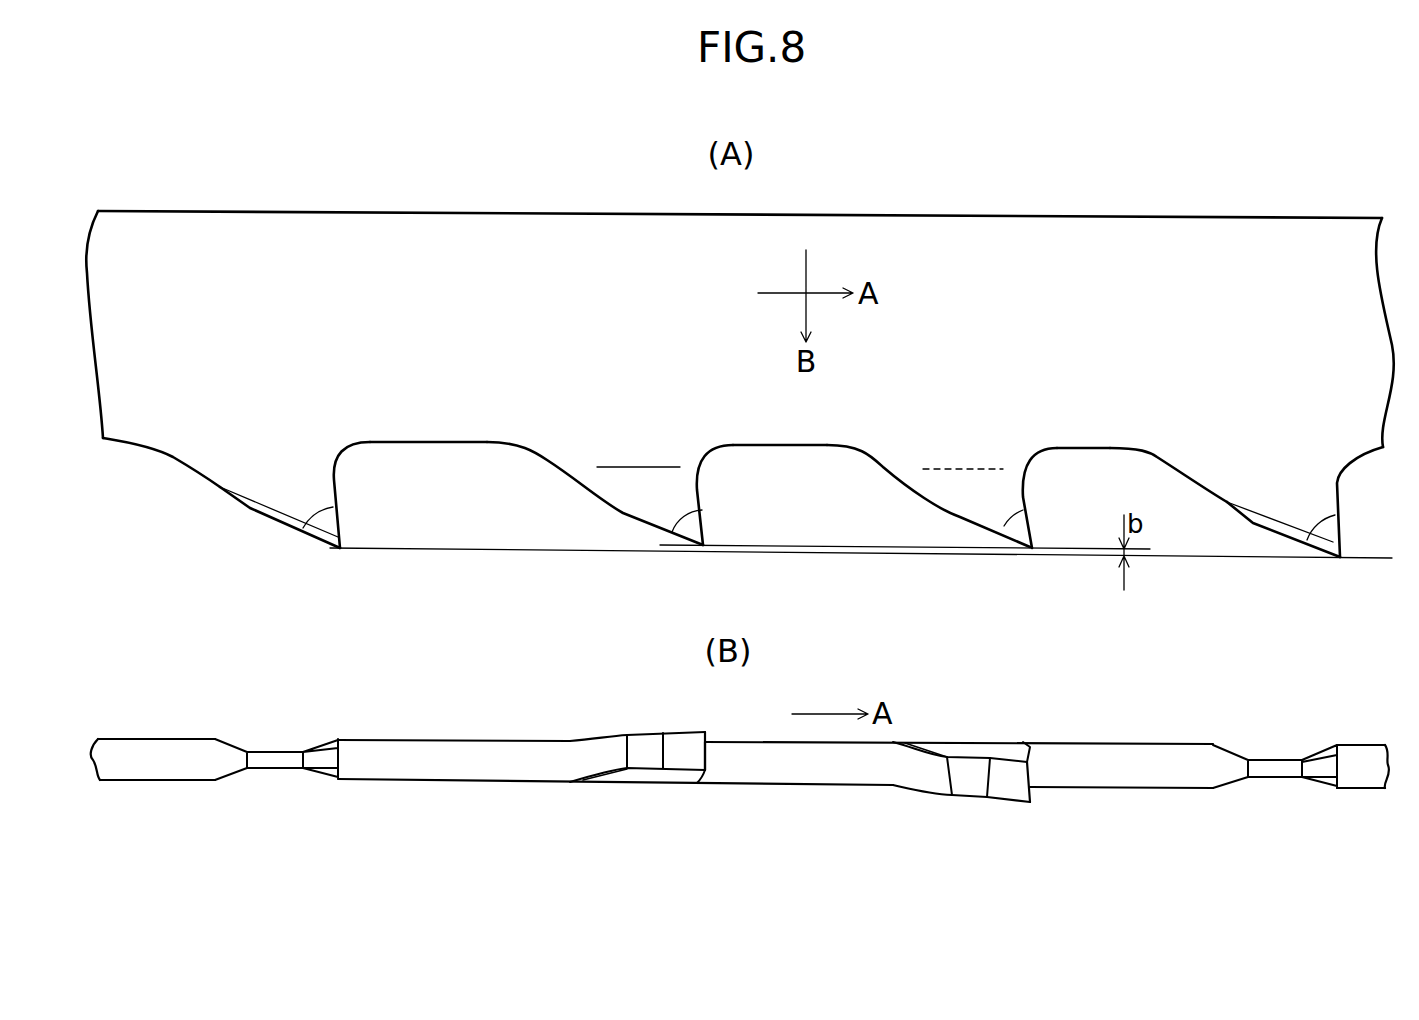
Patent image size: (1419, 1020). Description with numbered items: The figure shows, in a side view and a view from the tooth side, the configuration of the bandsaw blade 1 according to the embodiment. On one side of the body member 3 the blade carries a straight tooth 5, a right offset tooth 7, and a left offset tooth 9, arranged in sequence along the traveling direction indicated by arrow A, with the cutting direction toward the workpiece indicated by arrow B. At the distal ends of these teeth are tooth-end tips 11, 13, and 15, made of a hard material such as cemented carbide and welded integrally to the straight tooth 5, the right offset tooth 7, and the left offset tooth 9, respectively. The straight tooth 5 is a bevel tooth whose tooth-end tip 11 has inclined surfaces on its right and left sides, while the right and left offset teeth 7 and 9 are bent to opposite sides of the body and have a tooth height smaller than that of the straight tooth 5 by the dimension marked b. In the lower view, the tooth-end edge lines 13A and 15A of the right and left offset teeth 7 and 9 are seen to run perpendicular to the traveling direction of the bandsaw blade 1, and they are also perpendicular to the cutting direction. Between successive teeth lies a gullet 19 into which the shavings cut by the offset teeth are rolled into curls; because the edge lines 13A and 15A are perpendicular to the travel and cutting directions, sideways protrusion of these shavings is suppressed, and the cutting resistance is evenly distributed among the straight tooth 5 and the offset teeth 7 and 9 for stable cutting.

The bandsaw blade 1 is at (934, 190).
The body member 3 is at (1205, 213).
The straight tooth 5 is at (287, 488).
The right offset tooth 7 is at (1003, 492).
The left offset tooth 9 is at (658, 488).
The tooth-end tip 11 is at (1333, 527).
The tooth-end tip 13 is at (1033, 530).
The tooth-end edge line 13A is at (1033, 787).
The tooth-end tip 15 is at (700, 528).
The tooth-end edge line 15A is at (705, 753).
The gullet 19 is at (483, 440).